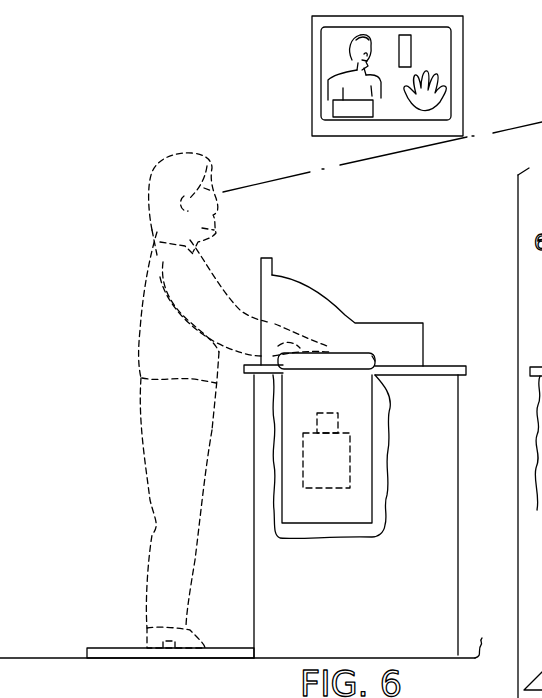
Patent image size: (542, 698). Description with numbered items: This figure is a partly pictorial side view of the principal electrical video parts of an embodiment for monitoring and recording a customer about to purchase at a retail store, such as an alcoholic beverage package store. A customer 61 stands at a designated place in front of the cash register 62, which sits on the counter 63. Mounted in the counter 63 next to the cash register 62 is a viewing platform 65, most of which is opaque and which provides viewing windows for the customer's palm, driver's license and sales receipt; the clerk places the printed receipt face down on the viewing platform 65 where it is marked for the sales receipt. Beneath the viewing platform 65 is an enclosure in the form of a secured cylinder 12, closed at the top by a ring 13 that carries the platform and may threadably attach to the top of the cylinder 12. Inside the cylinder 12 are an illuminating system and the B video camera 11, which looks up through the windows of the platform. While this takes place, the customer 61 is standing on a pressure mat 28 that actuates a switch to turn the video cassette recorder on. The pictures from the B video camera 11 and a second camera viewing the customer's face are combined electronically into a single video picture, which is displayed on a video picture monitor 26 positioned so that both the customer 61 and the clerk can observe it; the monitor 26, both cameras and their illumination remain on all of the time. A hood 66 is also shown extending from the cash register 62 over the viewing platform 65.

The video picture monitor 26 is at (463, 57).
The customer 61 is at (133, 337).
The cash register 62 is at (283, 273).
The hood 66 is at (347, 291).
The viewing platform 65 is at (352, 355).
The ring 13 is at (372, 359).
The counter 63 is at (443, 366).
The B video camera 11 is at (350, 463).
The secured cylinder 12 is at (384, 512).
The pressure mat 28 is at (114, 648).